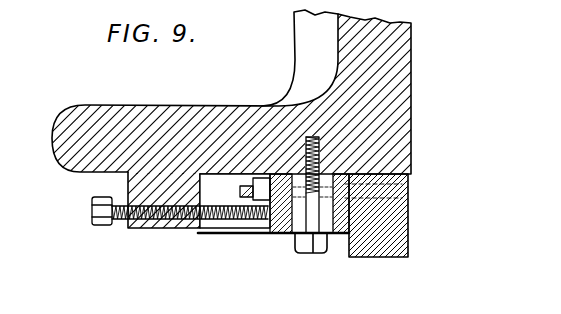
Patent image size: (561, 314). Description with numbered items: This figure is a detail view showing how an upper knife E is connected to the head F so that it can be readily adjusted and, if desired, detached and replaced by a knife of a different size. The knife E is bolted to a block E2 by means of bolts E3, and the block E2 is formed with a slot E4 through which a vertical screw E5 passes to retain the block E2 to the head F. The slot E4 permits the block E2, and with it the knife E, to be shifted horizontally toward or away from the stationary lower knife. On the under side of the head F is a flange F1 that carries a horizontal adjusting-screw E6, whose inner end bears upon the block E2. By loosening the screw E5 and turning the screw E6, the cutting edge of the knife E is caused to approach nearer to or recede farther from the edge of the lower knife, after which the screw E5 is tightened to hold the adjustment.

The head F is at (390, 71).
The flange F1 is at (166, 203).
The upper knife E is at (382, 257).
The block E2 is at (273, 232).
The bolt E3 is at (337, 215).
The slot E4 is at (298, 228).
The vertical screw E5 is at (312, 254).
The horizontal adjusting-screw E6 is at (92, 205).